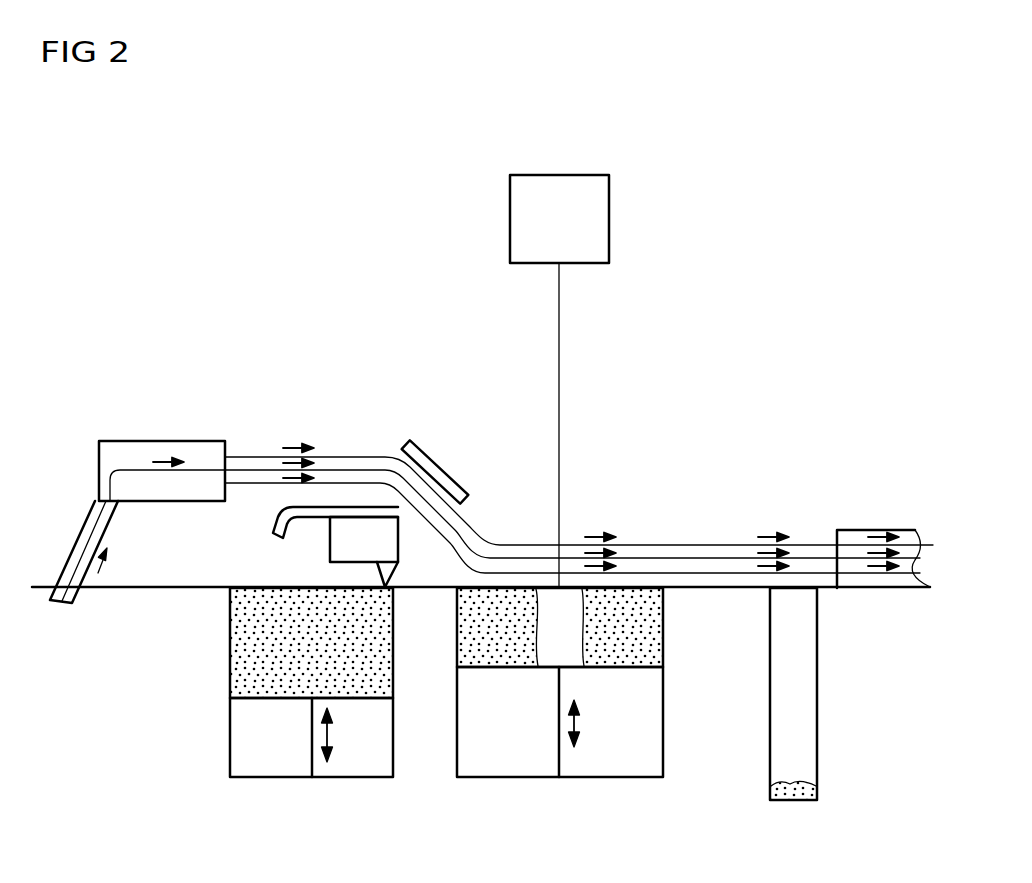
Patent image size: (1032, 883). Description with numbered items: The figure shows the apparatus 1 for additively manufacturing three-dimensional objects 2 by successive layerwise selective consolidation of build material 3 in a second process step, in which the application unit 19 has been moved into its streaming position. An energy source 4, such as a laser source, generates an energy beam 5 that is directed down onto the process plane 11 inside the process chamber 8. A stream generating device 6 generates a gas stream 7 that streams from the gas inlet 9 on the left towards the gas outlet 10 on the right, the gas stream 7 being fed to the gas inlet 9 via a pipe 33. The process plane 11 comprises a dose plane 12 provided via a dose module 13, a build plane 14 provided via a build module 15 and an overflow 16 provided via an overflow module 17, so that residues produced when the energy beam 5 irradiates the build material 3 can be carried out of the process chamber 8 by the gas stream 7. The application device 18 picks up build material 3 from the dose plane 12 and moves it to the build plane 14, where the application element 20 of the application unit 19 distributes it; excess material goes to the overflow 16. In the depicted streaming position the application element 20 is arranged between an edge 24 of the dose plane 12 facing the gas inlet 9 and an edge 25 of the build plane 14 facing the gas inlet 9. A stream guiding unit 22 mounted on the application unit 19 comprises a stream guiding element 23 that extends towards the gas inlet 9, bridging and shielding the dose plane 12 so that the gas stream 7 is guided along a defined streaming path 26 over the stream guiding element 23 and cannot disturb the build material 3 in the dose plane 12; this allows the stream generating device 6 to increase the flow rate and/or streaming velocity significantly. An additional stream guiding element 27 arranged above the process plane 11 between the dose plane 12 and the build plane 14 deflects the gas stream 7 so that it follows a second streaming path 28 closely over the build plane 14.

The apparatus 1 is at (690, 130).
The three-dimensional object 2 is at (567, 643).
The build material 3 is at (372, 675).
The energy source 4 is at (561, 175).
The energy beam 5 is at (560, 362).
The stream generating device 6 is at (206, 409).
The gas stream 7 is at (333, 457).
The process chamber 8 is at (767, 355).
The gas inlet 9 is at (168, 441).
The gas outlet 10 is at (903, 530).
The process plane 11 is at (698, 572).
The dose plane 12 is at (258, 570).
The dose module 13 is at (285, 728).
The build plane 14 is at (640, 572).
The build module 15 is at (609, 700).
The overflow 16 is at (800, 572).
The overflow module 17 is at (836, 697).
The application device 18 is at (412, 552).
The application unit 19 is at (413, 537).
The application element 20 is at (378, 568).
The stream guiding unit 22 is at (379, 503).
The stream guiding element 23 is at (350, 507).
The edge of the dose plane 24 is at (230, 590).
The edge of the build plane 25 is at (457, 588).
The streaming path 26 is at (291, 447).
The additional stream guiding element 27 is at (441, 474).
The second streaming path 28 is at (590, 537).
The pipe 33 is at (95, 523).